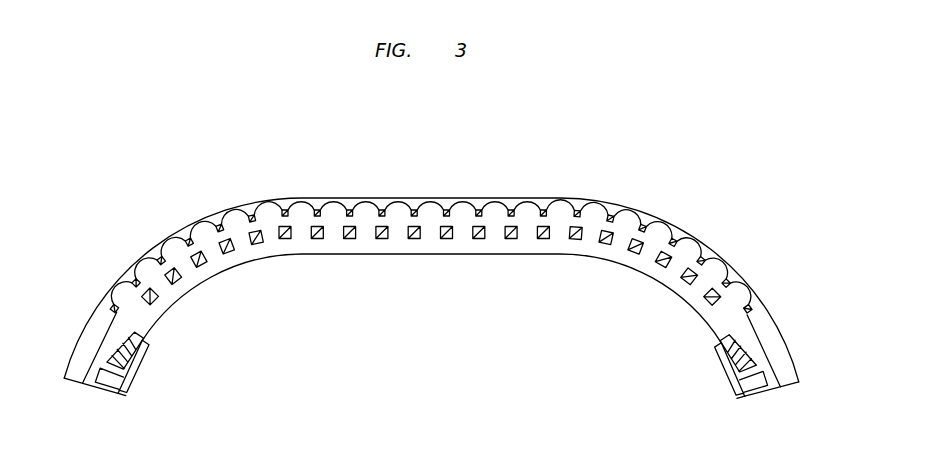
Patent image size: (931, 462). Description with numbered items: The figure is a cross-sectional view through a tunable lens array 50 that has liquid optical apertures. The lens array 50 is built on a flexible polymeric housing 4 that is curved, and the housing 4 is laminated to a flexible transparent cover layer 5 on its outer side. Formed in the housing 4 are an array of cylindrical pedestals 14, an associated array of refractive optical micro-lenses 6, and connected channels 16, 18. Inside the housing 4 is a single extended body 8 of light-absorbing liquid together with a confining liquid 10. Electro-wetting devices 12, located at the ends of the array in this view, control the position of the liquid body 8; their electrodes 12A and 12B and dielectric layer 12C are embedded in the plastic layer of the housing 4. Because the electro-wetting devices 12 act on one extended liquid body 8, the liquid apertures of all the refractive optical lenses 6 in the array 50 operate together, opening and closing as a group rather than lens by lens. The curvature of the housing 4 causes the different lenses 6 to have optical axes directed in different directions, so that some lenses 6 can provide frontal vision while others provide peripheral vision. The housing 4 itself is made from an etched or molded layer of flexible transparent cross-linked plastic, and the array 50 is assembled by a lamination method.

The lens array 50 is at (622, 145).
The cover layer 5 is at (528, 198).
The confining liquid 10 is at (284, 207).
The refractive optical micro-lenses 6 is at (170, 246).
The connected channels 16 is at (214, 222).
The cylindrical pedestals 14 is at (244, 246).
The extended body of light-absorbing liquid 8 is at (112, 333).
The connected channels 18 is at (104, 366).
The flexible polymeric housing 4 is at (88, 382).
The electro-wetting devices 12 is at (425, 381).
The electrode 12A is at (114, 394).
The electrode 12B is at (147, 334).
The dielectric layer 12C is at (758, 394).